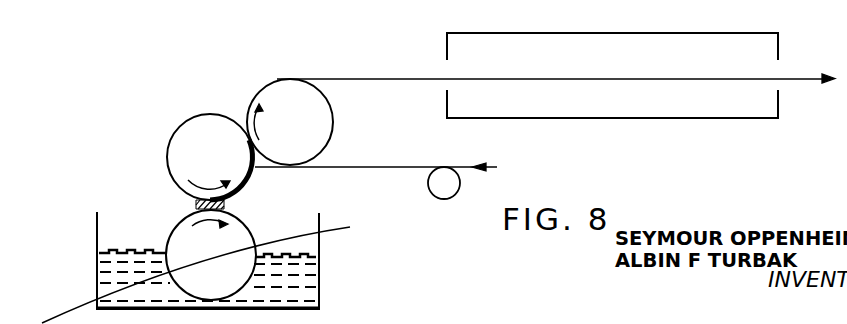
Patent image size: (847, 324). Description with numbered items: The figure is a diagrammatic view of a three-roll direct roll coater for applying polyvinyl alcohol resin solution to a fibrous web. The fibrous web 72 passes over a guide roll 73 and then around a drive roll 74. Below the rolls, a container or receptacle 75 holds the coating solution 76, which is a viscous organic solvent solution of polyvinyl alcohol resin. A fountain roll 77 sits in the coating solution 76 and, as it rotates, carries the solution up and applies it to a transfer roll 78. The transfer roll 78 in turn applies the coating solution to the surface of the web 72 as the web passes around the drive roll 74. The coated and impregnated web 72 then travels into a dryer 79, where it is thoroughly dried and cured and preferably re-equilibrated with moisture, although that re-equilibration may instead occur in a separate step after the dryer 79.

The fibrous web 72 is at (497, 166).
The guide roll 73 is at (440, 199).
The drive roll 74 is at (343, 106).
The container or receptacle 75 is at (320, 306).
The coating solution 76 is at (272, 252).
The fountain roll 77 is at (240, 222).
The transfer roll 78 is at (175, 132).
The dryer 79 is at (505, 33).